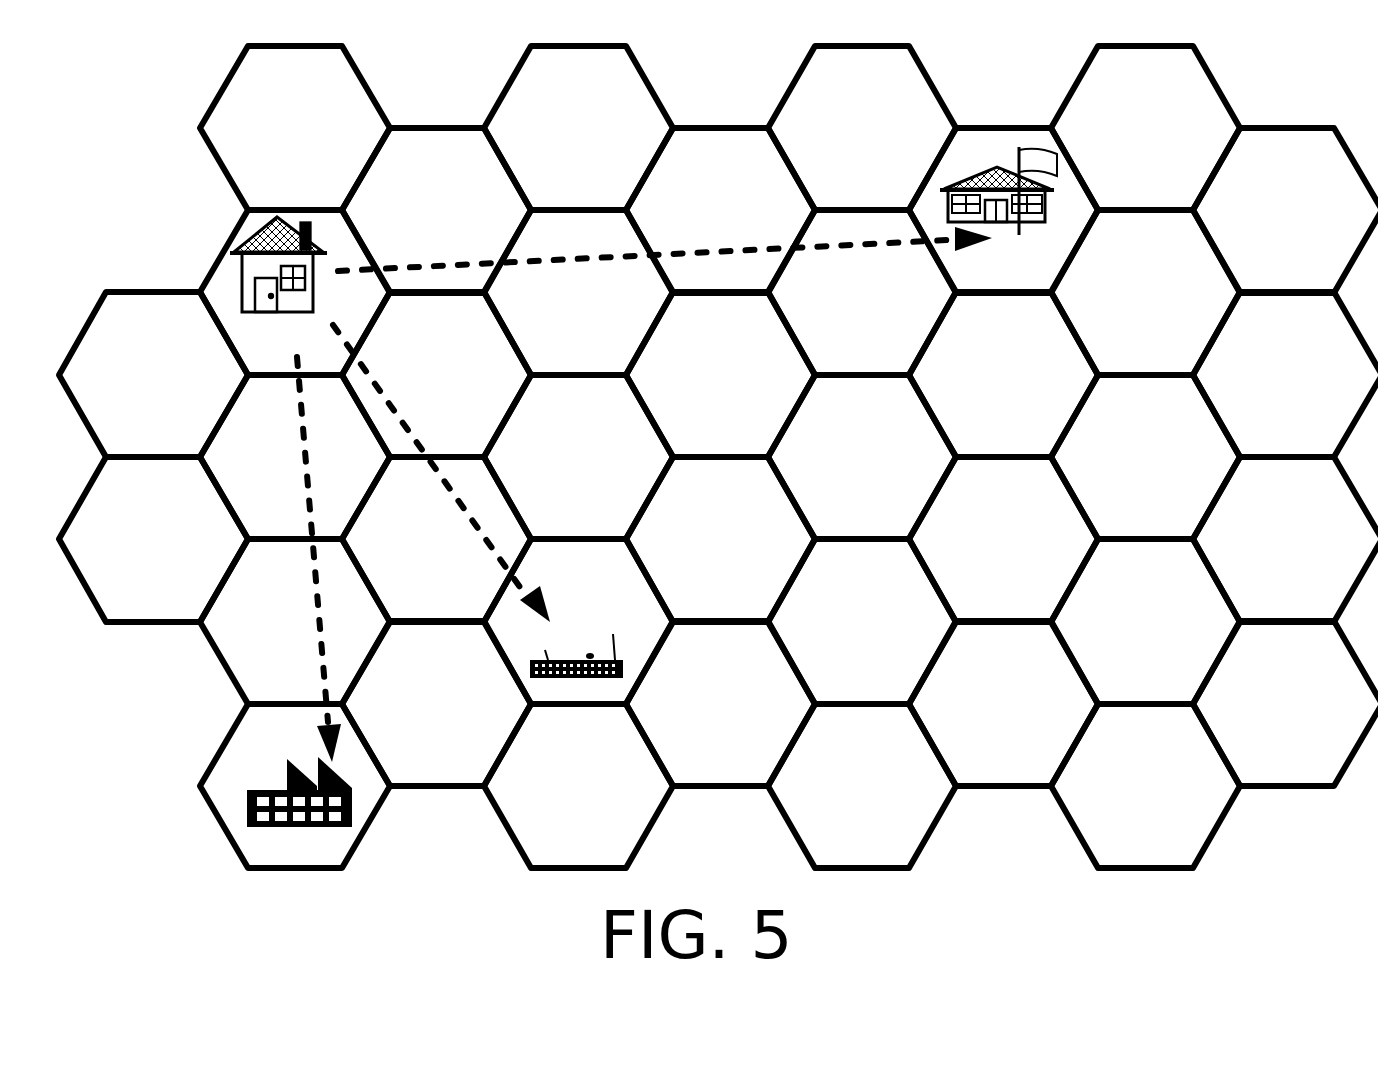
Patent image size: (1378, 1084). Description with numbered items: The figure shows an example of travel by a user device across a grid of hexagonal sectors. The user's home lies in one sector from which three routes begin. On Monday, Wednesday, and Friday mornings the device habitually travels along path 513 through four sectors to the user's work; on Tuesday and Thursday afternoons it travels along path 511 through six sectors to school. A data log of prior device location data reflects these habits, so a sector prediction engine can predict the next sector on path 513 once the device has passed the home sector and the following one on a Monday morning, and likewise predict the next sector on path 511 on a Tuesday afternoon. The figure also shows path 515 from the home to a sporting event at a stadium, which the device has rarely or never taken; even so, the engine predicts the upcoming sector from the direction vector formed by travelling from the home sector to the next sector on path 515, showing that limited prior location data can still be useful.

The path 511 is at (394, 264).
The path 513 is at (308, 474).
The path 515 is at (363, 368).